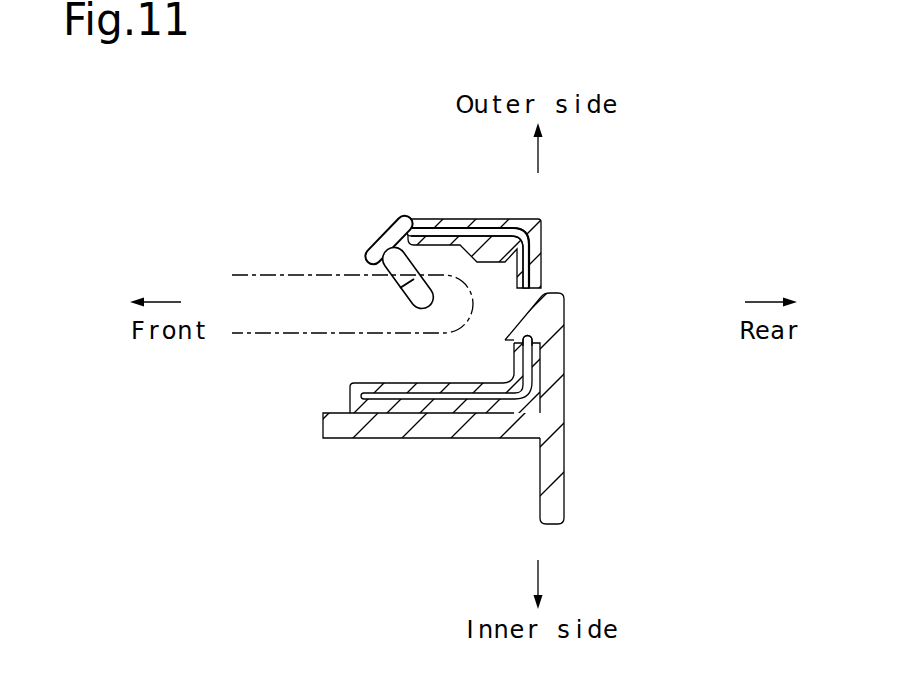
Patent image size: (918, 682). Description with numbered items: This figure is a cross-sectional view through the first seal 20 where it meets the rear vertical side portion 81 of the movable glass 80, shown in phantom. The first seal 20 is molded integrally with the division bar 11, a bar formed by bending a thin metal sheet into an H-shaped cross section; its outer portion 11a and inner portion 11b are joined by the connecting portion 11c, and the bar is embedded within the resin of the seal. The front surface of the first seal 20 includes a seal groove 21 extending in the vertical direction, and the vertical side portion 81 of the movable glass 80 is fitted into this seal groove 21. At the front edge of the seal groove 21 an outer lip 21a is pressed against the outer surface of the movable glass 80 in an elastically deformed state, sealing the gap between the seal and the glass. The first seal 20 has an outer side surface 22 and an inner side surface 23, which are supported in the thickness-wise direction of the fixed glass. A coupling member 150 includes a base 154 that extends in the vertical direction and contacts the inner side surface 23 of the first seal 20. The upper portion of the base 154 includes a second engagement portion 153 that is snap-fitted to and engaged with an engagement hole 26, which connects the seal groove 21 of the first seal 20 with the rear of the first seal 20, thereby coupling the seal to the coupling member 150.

The division bar 11 is at (510, 225).
The outer portion 11a is at (494, 222).
The inner portion 11b is at (473, 400).
The connecting portion 11c is at (537, 247).
The first seal 20 is at (468, 341).
The seal groove 21 is at (440, 376).
The outer lip 21a is at (381, 243).
The outer side surface 22 is at (537, 219).
The inner side surface 23 is at (498, 434).
The engagement hole 26 is at (532, 334).
The movable glass 80 is at (254, 260).
The vertical side portion 81 is at (410, 343).
The coupling member 150 is at (489, 341).
The second engagement portion 153 is at (565, 305).
The base 154 is at (375, 440).